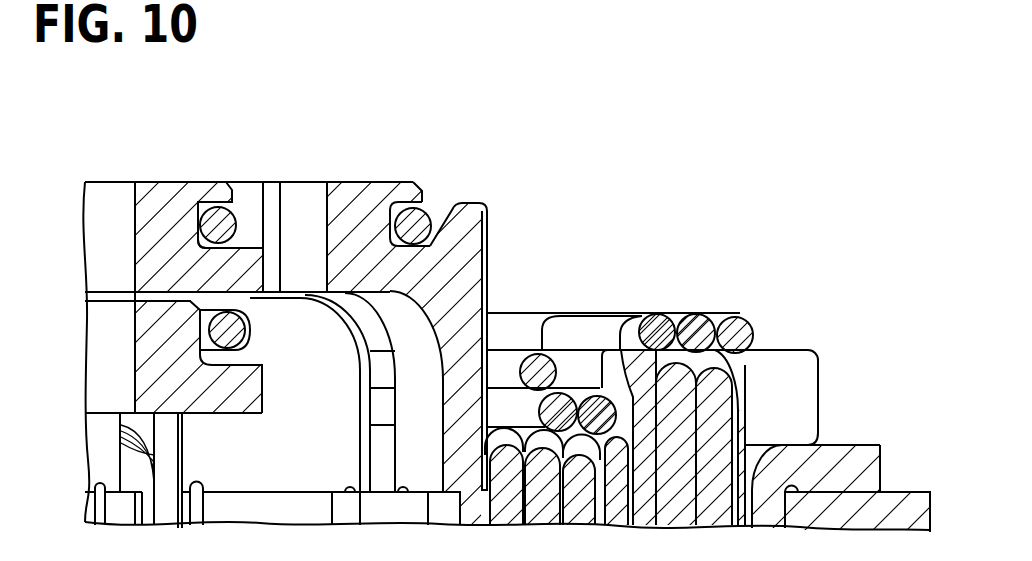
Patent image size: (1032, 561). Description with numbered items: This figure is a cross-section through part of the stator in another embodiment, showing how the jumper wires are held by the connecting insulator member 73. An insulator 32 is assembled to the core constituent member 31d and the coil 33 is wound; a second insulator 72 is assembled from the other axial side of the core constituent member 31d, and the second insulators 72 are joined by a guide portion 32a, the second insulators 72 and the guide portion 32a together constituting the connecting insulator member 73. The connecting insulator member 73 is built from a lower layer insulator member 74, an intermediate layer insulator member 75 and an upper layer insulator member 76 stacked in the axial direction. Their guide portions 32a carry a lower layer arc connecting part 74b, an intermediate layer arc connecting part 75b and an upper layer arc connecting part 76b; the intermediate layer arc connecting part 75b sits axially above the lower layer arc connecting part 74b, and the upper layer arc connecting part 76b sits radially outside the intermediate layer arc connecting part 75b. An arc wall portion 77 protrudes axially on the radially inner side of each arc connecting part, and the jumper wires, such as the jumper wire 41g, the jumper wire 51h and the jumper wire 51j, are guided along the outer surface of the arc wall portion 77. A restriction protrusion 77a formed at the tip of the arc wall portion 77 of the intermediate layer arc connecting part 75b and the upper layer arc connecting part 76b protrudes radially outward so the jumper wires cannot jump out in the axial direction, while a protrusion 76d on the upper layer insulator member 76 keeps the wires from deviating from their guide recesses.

The core constituent member 31d is at (902, 502).
The insulator 32 is at (832, 280).
The second insulator 72 is at (808, 446).
The guide portion 32a is at (325, 200).
The coil 33 is at (677, 313).
The jumper wire 41g is at (248, 326).
The jumper wire 51h is at (230, 222).
The jumper wire 51j is at (420, 226).
The connecting insulator member 73 is at (498, 280).
The lower layer insulator member 74 is at (265, 393).
The intermediate layer insulator member 75 is at (152, 182).
The upper layer insulator member 76 is at (485, 256).
The lower layer arc connecting part 74b is at (150, 347).
The intermediate layer arc connecting part 75b is at (145, 224).
The upper layer arc connecting part 76b is at (352, 190).
The protrusion 76d is at (472, 206).
The arc wall portion 77 is at (172, 182).
The restriction protrusion 77a is at (232, 202).